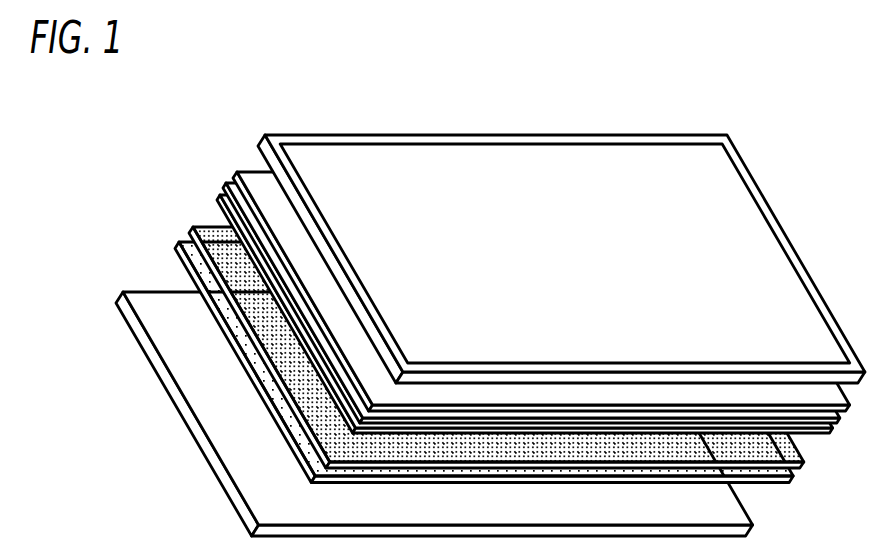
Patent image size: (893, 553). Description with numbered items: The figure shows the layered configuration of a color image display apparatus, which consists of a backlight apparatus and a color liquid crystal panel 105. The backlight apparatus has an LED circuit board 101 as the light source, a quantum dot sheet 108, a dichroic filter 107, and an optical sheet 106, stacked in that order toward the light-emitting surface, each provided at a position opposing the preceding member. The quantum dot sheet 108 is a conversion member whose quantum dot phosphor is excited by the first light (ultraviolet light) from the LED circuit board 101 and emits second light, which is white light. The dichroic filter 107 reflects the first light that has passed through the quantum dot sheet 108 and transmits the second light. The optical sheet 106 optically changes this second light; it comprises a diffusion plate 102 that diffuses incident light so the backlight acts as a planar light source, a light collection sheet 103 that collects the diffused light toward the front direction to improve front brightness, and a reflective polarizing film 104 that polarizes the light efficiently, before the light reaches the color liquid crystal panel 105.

The LED circuit board 101 is at (160, 330).
The diffusion plate 102 is at (221, 194).
The light collection sheet 103 is at (229, 183).
The reflective polarizing film 104 is at (255, 172).
The color liquid crystal panel 105 is at (308, 135).
The optical sheet 106 is at (168, 79).
The dichroic filter 107 is at (193, 226).
The quantum dot sheet 108 is at (183, 257).